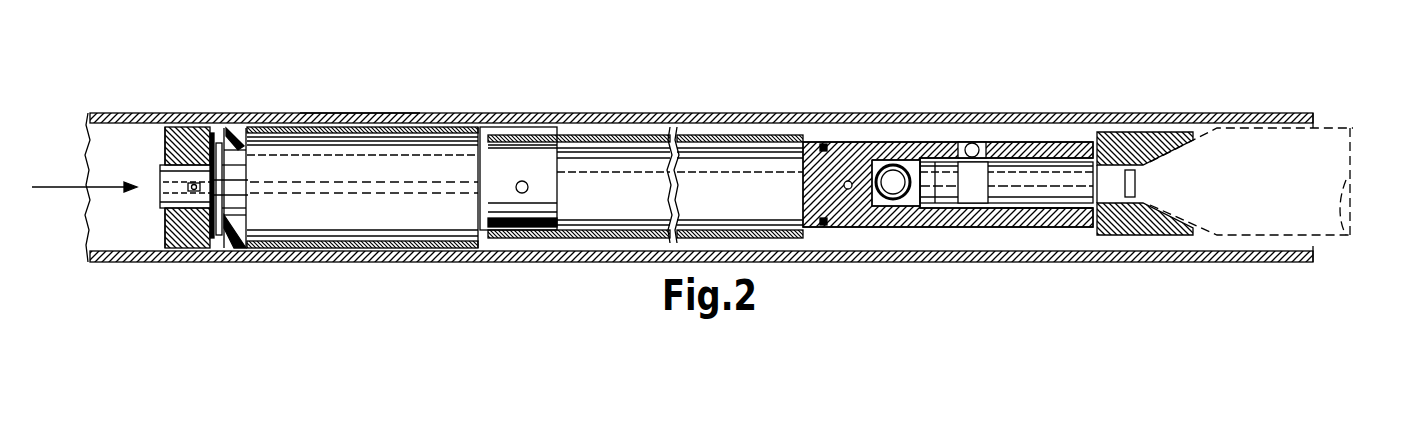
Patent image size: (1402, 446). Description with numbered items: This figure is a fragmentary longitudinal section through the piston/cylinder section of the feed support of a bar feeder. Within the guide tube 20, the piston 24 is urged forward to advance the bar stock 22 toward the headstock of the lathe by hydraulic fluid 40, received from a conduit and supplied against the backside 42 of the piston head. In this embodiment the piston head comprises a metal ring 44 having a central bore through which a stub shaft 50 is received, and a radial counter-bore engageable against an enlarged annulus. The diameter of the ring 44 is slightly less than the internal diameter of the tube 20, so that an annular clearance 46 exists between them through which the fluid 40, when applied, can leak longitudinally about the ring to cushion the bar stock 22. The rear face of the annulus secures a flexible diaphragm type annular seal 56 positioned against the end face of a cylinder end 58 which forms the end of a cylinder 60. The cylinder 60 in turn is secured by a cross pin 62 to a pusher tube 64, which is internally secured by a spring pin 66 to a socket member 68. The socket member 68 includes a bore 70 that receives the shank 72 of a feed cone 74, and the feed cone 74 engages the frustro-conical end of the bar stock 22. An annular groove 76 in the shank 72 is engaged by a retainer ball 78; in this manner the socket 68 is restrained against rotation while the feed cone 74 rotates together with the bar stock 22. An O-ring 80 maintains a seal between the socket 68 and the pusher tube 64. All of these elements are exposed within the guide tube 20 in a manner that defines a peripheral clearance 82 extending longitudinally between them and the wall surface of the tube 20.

The guide tube 20 is at (580, 113).
The bar stock 22 is at (1320, 120).
The piston 24 is at (522, 138).
The hydraulic fluid 40 is at (62, 186).
The backside of the piston head 42 is at (165, 138).
The metal ring 44 is at (180, 262).
The annular clearance 46 is at (183, 113).
The stub shaft 50 is at (160, 200).
The annular seal 56 is at (228, 246).
The cylinder end 58 is at (240, 168).
The cylinder 60 is at (400, 140).
The cross pin 62 is at (525, 210).
The pusher tube 64 is at (637, 140).
The spring pin 66 is at (848, 181).
The socket member 68 is at (895, 227).
The bore 70 is at (1060, 208).
The shank 72 is at (1030, 168).
The feed cone 74 is at (1125, 132).
The annular groove 76 is at (970, 206).
The retainer ball 78 is at (972, 143).
The O-ring 80 is at (823, 144).
The peripheral clearance 82 is at (338, 115).